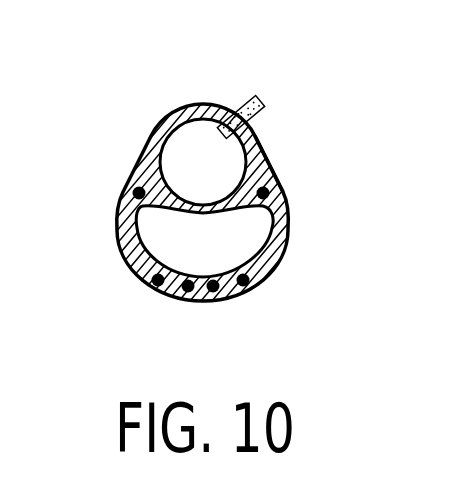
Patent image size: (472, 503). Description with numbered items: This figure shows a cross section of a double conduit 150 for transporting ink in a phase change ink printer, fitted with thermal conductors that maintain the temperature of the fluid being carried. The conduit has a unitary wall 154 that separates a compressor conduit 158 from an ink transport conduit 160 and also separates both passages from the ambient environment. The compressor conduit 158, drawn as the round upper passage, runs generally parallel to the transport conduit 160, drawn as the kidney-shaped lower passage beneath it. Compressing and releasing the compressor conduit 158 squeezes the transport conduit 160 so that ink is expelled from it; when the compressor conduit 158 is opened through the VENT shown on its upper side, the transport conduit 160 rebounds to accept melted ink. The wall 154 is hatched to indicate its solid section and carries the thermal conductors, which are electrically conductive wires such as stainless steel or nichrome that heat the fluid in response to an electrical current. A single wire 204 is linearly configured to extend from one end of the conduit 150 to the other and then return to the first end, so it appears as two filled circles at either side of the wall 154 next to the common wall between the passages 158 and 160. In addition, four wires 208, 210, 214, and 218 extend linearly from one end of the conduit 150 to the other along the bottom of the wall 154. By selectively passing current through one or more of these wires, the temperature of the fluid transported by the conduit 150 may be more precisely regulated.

The catheter shaft assembly 150 is at (303, 118).
The unitary wall 154 is at (277, 172).
The compressor conduit 158 is at (164, 128).
The ink transport conduit 160 is at (156, 247).
The wire 204 is at (133, 191).
The wire 208 is at (155, 286).
The wire 210 is at (189, 292).
The wire 214 is at (216, 292).
The wire 218 is at (247, 286).
The vent VENT is at (262, 88).